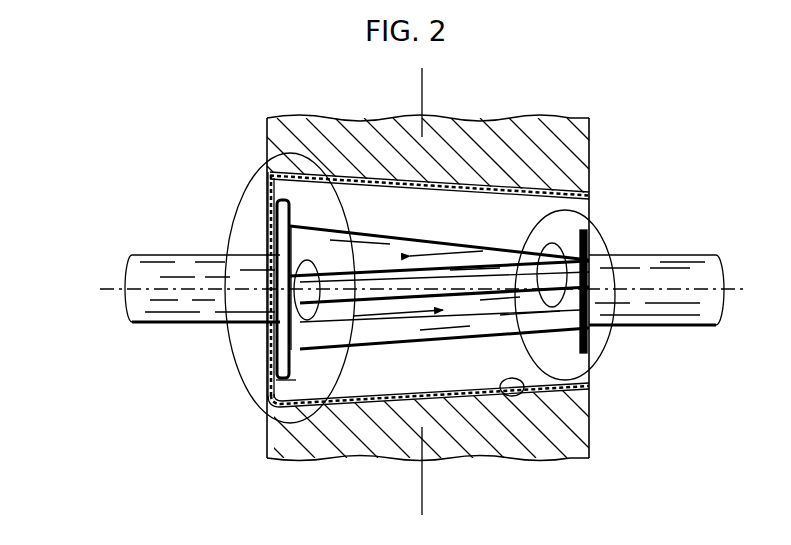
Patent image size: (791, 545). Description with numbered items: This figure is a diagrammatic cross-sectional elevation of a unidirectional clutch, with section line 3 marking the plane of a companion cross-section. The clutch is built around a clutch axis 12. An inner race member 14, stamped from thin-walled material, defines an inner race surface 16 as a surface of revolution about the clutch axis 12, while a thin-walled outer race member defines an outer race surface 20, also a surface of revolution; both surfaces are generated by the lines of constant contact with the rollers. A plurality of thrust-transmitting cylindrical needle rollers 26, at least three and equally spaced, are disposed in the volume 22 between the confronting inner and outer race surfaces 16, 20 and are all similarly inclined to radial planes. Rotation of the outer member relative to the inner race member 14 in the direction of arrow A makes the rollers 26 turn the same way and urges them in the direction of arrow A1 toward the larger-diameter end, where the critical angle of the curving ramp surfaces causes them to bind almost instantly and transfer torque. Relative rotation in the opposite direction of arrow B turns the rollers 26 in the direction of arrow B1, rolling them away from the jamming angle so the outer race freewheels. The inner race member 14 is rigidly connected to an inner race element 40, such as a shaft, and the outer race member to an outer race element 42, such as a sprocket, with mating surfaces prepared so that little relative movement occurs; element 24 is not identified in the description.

The section line 3- 3 is at (420, 88).
The clutch axis 12 is at (117, 286).
The inner race member 14 is at (503, 257).
The inner race surface 16 is at (437, 242).
The outer race surface 20 is at (515, 398).
The volume 22 is at (310, 385).
The end flange 24 is at (267, 172).
The needle rollers 26 is at (338, 305).
The inner race element 40 is at (608, 263).
The outer race element 42 is at (524, 444).
The arrow A is at (258, 192).
The arrow A1 is at (312, 262).
The arrow B is at (599, 232).
The arrow B1 is at (586, 212).